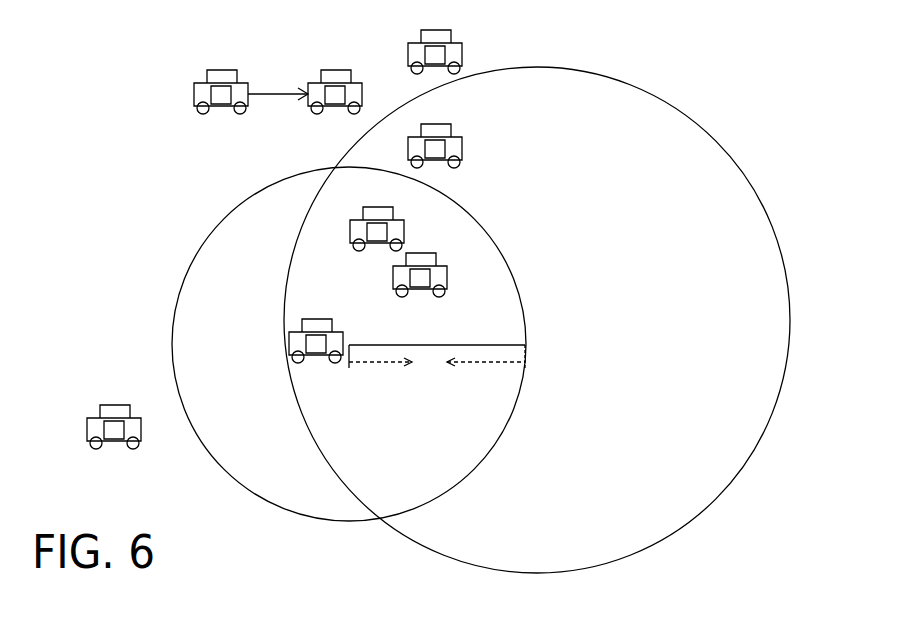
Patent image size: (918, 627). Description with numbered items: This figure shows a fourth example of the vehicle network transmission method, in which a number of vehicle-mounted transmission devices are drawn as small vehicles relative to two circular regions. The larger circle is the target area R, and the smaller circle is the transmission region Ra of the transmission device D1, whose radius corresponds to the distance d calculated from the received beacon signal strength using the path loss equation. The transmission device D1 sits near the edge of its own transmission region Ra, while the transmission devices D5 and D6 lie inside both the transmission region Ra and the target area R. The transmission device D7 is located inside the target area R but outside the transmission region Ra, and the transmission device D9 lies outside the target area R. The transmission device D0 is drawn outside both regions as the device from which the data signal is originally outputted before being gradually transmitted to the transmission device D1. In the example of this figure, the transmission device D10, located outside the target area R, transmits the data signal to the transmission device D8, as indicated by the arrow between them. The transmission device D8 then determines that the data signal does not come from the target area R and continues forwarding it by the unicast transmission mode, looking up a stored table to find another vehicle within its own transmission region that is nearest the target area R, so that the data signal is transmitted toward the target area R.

The transmission device D0 is at (132, 418).
The transmission device D1 is at (333, 331).
The transmission device D5 is at (438, 266).
The transmission device D6 is at (395, 220).
The transmission device D7 is at (452, 138).
The transmission device D8 is at (353, 84).
The transmission device D9 is at (452, 42).
The transmission device D10 is at (245, 84).
The transmission region Ra is at (320, 521).
The target area R is at (708, 508).
The distance d is at (437, 361).